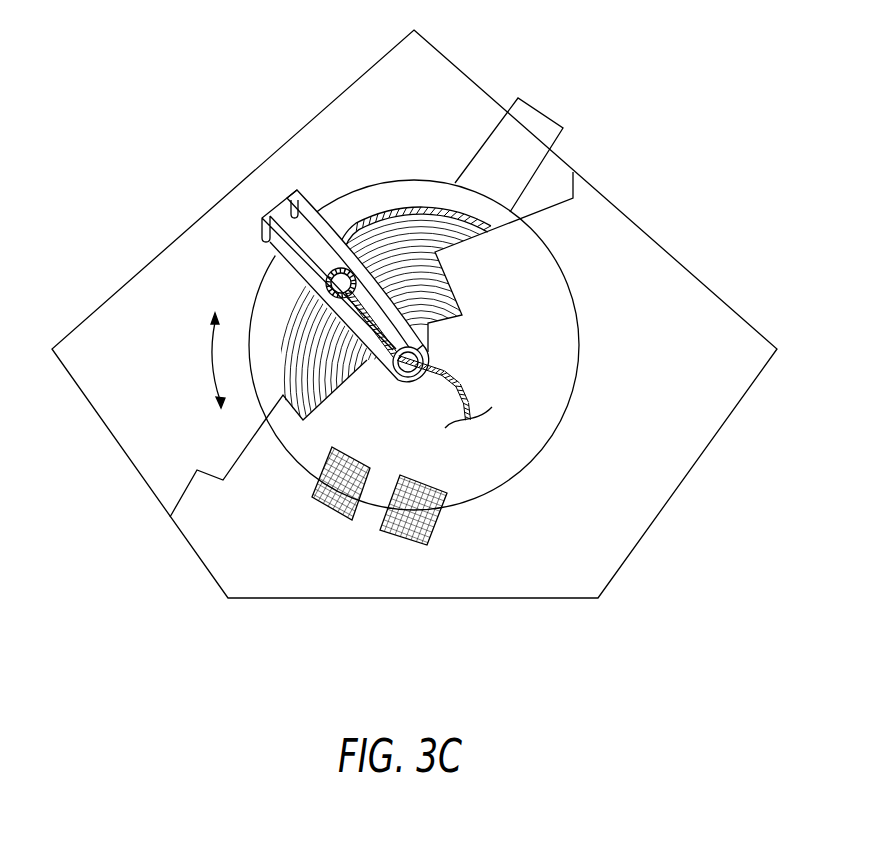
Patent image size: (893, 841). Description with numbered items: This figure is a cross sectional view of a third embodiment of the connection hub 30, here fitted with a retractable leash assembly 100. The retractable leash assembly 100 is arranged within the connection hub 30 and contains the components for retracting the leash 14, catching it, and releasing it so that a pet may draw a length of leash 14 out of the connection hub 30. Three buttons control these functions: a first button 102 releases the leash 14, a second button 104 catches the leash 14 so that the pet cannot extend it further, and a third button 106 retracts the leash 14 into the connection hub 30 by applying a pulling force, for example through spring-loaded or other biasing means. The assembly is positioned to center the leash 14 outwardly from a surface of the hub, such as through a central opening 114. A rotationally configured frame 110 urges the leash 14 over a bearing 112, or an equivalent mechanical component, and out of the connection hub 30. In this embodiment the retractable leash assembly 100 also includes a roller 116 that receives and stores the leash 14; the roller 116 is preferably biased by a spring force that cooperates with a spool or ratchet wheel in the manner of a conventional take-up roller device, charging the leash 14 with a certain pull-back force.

The connection hub 30 is at (155, 100).
The retractable leash assembly 100 is at (359, 165).
The first button 102 is at (544, 112).
The second button 104 is at (440, 518).
The third button 106 is at (321, 503).
The rotationally configured frame 110 is at (300, 211).
The bearing 112 is at (333, 286).
The central opening 114 is at (406, 377).
The roller 116 is at (258, 298).
The leash 14 is at (456, 384).